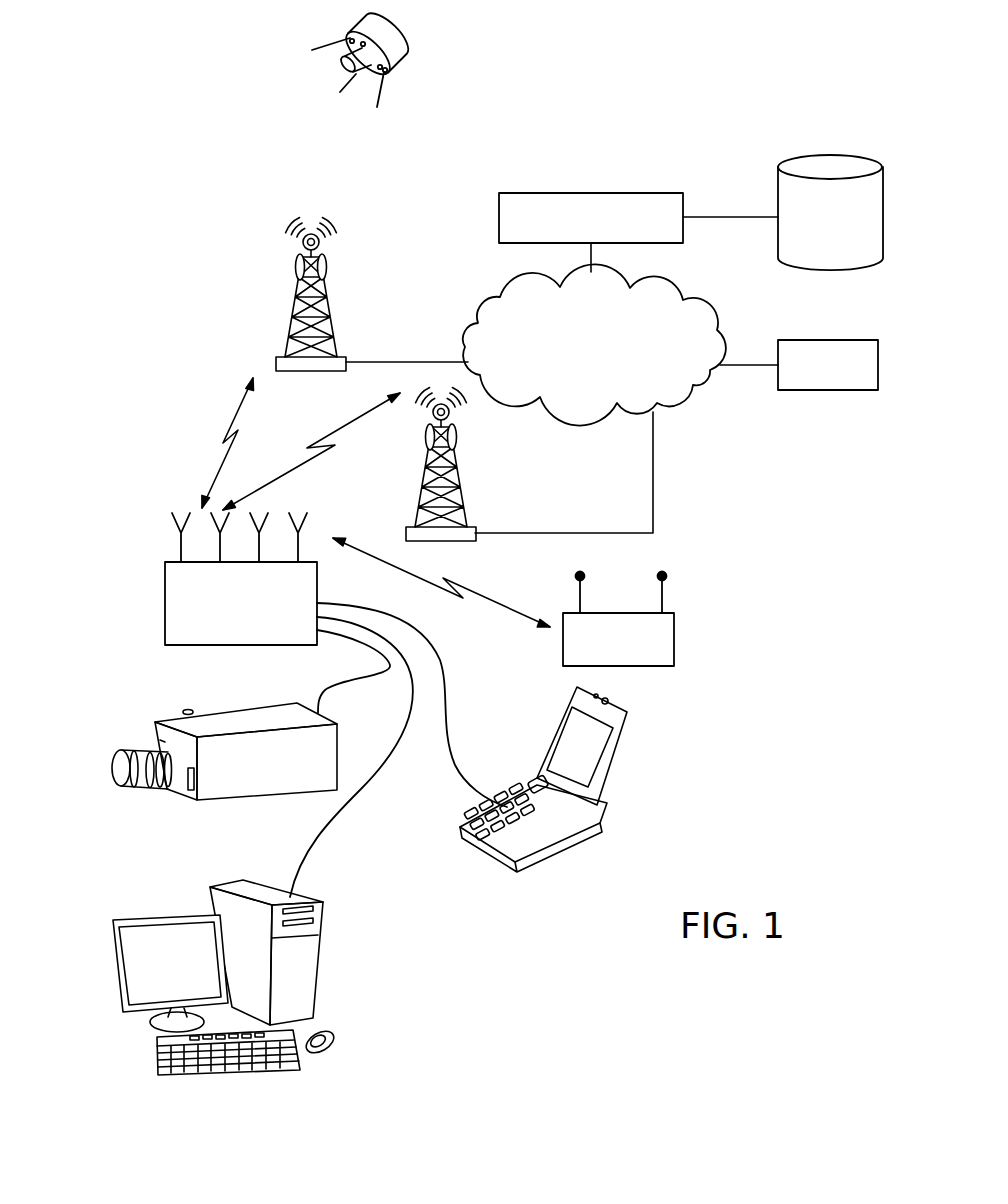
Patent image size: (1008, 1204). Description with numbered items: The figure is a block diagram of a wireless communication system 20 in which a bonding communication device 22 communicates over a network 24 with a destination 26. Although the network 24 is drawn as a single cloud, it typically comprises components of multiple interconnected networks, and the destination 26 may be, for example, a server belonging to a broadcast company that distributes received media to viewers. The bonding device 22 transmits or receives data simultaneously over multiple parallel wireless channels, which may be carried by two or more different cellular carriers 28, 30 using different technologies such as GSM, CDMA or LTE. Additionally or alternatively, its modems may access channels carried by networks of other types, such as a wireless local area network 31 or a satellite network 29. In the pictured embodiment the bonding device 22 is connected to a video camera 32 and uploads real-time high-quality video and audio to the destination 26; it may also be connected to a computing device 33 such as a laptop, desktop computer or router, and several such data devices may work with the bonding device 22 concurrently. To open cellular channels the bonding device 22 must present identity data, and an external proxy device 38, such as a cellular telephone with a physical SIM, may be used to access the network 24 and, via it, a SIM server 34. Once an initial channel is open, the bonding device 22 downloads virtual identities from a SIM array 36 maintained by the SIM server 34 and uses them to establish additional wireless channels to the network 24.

The wireless communication system 20 is at (170, 43).
The bonding communication device 22 is at (165, 603).
The network 24 is at (720, 310).
The destination 26 is at (828, 392).
The cellular carrier 28 is at (297, 270).
The satellite network 29 is at (390, 33).
The cellular carrier 30 is at (455, 436).
The wireless local area network 31 is at (674, 635).
The video camera 32 is at (112, 768).
The computing device 33 is at (323, 945).
The SIM server 34 is at (591, 193).
The SIM array 36 is at (828, 154).
The external proxy device 38 is at (627, 708).